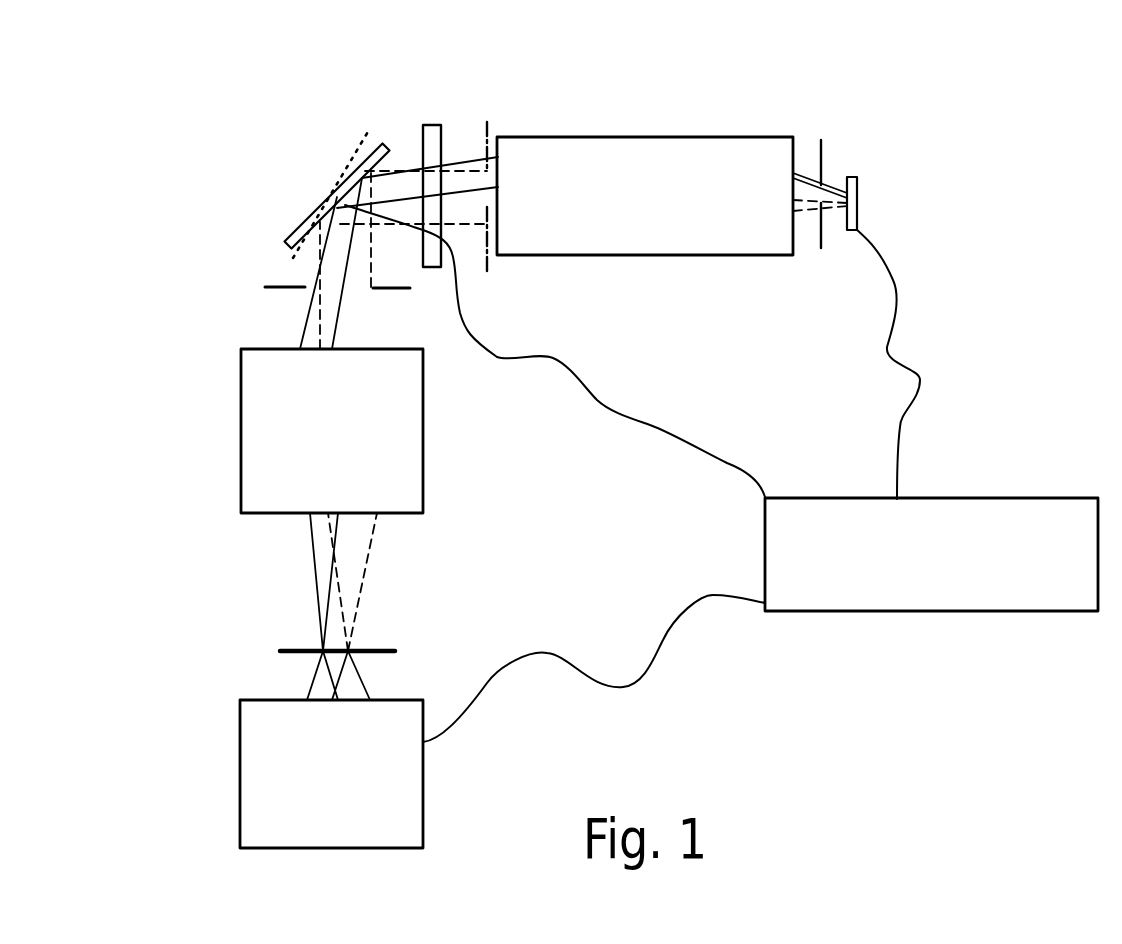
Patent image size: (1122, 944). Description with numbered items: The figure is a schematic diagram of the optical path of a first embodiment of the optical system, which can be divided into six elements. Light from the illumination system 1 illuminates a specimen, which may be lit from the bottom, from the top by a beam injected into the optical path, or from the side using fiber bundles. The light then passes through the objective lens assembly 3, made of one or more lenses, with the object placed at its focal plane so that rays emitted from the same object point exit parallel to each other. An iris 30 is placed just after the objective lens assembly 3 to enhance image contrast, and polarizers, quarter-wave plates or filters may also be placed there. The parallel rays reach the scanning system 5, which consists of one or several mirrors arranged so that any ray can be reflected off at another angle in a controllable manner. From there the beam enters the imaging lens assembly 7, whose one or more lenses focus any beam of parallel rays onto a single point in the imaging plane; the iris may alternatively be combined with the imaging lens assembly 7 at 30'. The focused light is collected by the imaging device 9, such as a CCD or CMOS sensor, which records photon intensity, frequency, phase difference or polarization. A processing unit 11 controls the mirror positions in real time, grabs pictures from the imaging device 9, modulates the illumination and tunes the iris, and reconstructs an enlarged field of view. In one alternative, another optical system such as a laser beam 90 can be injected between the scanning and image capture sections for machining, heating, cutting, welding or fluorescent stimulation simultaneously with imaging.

The illumination system 1 is at (329, 753).
The objective lens assembly 3 is at (348, 447).
The scanning system 5 is at (330, 192).
The imaging lens assembly 7 is at (656, 214).
The imaging device 9 is at (860, 208).
The processing unit 11 is at (893, 587).
The iris 30 is at (283, 329).
The iris combined with imaging lens assembly 30' is at (512, 166).
The laser beam 90 is at (440, 124).